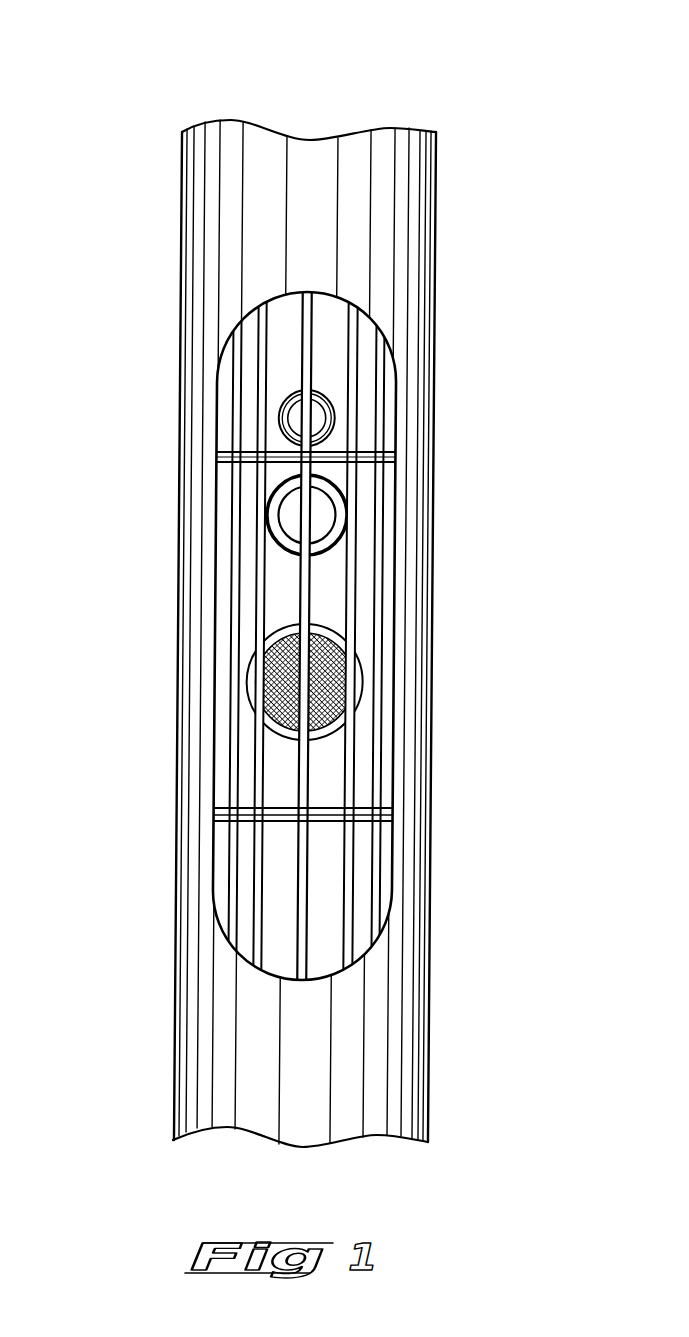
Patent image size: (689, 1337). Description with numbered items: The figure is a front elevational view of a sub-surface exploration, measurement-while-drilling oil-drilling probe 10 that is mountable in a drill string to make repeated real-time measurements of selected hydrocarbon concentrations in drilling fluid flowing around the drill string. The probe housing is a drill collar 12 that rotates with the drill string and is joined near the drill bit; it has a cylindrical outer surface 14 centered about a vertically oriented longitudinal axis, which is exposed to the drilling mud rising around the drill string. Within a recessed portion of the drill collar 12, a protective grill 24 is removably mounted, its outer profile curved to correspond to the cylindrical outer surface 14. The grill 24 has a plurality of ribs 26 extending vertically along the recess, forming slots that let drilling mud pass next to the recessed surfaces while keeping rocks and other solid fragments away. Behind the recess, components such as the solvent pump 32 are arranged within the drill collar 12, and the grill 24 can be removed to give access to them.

The oil-drilling probe 10 is at (288, 98).
The drill collar 12 is at (178, 215).
The cylindrical outer surface 14 is at (350, 143).
The protective grill 24 is at (357, 780).
The ribs 26 is at (262, 603).
The solvent pump 32 is at (327, 513).